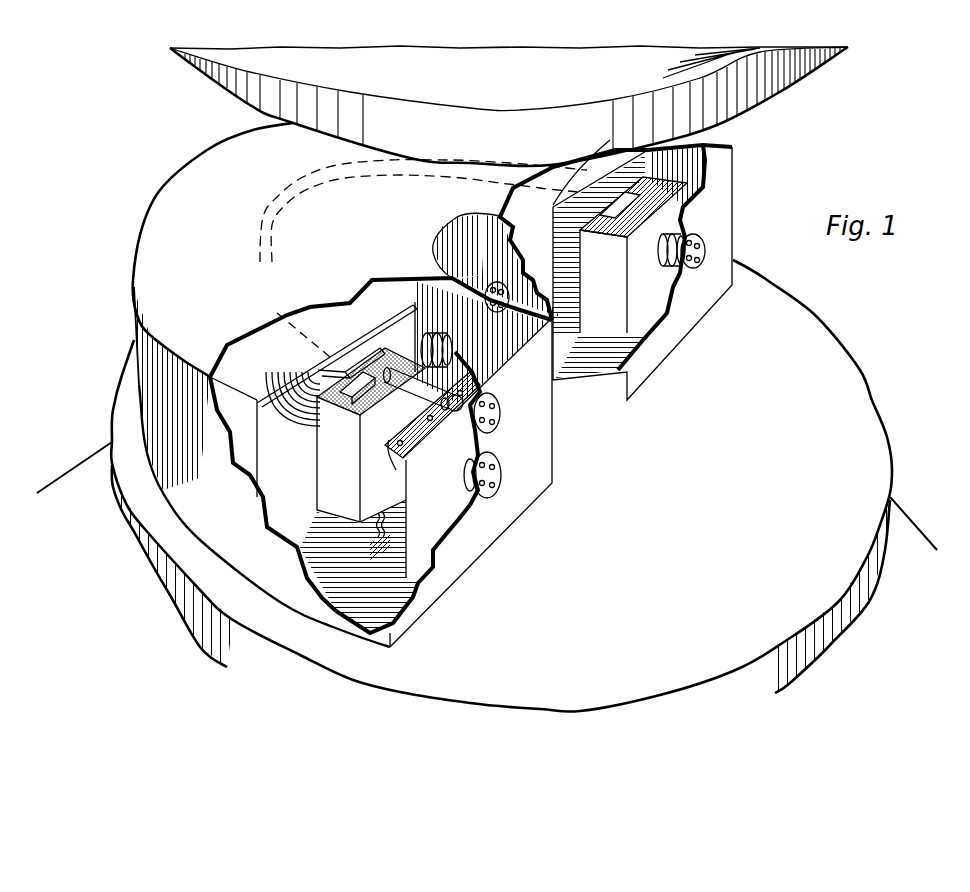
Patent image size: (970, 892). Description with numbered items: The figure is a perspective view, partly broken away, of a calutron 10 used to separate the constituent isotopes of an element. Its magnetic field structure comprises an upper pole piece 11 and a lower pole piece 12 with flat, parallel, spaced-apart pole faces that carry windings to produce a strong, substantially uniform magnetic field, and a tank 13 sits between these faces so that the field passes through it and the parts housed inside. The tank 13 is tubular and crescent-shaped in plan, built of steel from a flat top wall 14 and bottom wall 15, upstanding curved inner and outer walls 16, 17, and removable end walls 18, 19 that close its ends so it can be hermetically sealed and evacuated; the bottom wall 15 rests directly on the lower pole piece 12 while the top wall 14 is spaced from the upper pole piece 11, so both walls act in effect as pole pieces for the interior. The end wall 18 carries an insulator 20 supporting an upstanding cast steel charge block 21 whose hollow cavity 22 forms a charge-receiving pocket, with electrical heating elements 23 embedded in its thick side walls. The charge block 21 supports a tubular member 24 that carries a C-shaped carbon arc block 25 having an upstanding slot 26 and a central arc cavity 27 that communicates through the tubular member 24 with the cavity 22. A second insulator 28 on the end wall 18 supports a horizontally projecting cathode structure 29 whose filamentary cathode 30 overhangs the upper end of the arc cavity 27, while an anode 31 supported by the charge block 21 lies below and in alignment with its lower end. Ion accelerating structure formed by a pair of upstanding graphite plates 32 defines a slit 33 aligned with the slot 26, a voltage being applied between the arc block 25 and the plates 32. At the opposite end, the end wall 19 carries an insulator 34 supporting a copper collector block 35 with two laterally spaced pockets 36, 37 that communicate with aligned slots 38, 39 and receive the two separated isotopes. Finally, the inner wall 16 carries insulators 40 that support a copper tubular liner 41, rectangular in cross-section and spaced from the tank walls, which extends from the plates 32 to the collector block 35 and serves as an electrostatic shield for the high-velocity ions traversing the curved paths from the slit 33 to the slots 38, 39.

The calutron 10 is at (63, 229).
The upper pole piece 11 is at (760, 100).
The lower pole piece 12 is at (862, 395).
The tank 13 is at (163, 197).
The top wall 14 is at (157, 305).
The bottom wall 15 is at (423, 600).
The inner wall 16 is at (447, 237).
The outer wall 17 is at (193, 380).
The end wall 18 is at (537, 480).
The end wall 19 is at (643, 370).
The insulator 20 is at (456, 473).
The charge block 21 is at (433, 527).
The cavity 22 is at (441, 418).
The electrical heating elements 23 is at (390, 440).
The tubular member 24 is at (405, 418).
The arc block 25 is at (320, 480).
The slot 26 is at (340, 403).
The arc cavity 27 is at (387, 397).
The insulator 28 is at (498, 408).
The cathode structure 29 is at (365, 350).
The filamentary cathode 30 is at (360, 362).
The anode 31 is at (325, 528).
The upstanding plates 32 is at (292, 383).
The slit 33 is at (330, 368).
The insulator 34 is at (667, 257).
The collector block 35 is at (647, 297).
The pocket 36 is at (641, 233).
The pocket 37 is at (646, 238).
The slot 38 is at (560, 176).
The slot 39 is at (630, 182).
The insulators 40 is at (433, 335).
The tubular liner 41 is at (242, 362).